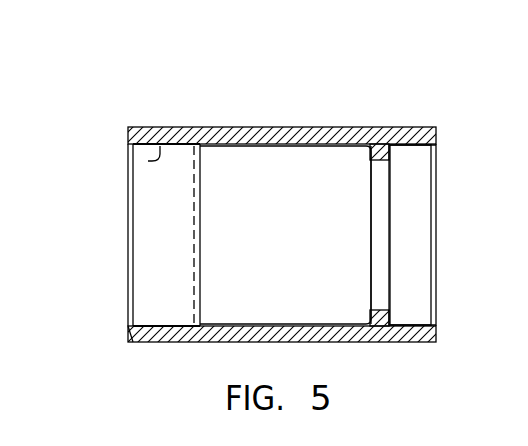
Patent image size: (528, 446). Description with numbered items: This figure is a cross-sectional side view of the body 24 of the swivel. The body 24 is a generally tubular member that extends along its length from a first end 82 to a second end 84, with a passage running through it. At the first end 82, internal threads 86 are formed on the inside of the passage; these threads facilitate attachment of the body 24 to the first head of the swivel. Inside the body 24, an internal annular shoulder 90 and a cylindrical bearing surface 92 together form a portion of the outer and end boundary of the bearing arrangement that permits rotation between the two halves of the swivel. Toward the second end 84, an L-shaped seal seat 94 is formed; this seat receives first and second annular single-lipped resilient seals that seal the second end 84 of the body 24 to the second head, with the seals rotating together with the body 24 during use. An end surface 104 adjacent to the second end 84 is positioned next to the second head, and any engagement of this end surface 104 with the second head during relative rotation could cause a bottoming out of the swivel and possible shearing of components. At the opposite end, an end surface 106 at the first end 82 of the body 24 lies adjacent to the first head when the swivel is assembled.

The body 24 is at (292, 117).
The first end 82 is at (152, 343).
The second end 84 is at (405, 343).
The internal threads 86 is at (148, 161).
The internal annular shoulder 90 is at (370, 203).
The cylindrical bearing surface 92 is at (281, 323).
The L-shaped seal seat 94 is at (408, 323).
The end surface 104 is at (437, 132).
The end surface 106 is at (127, 335).